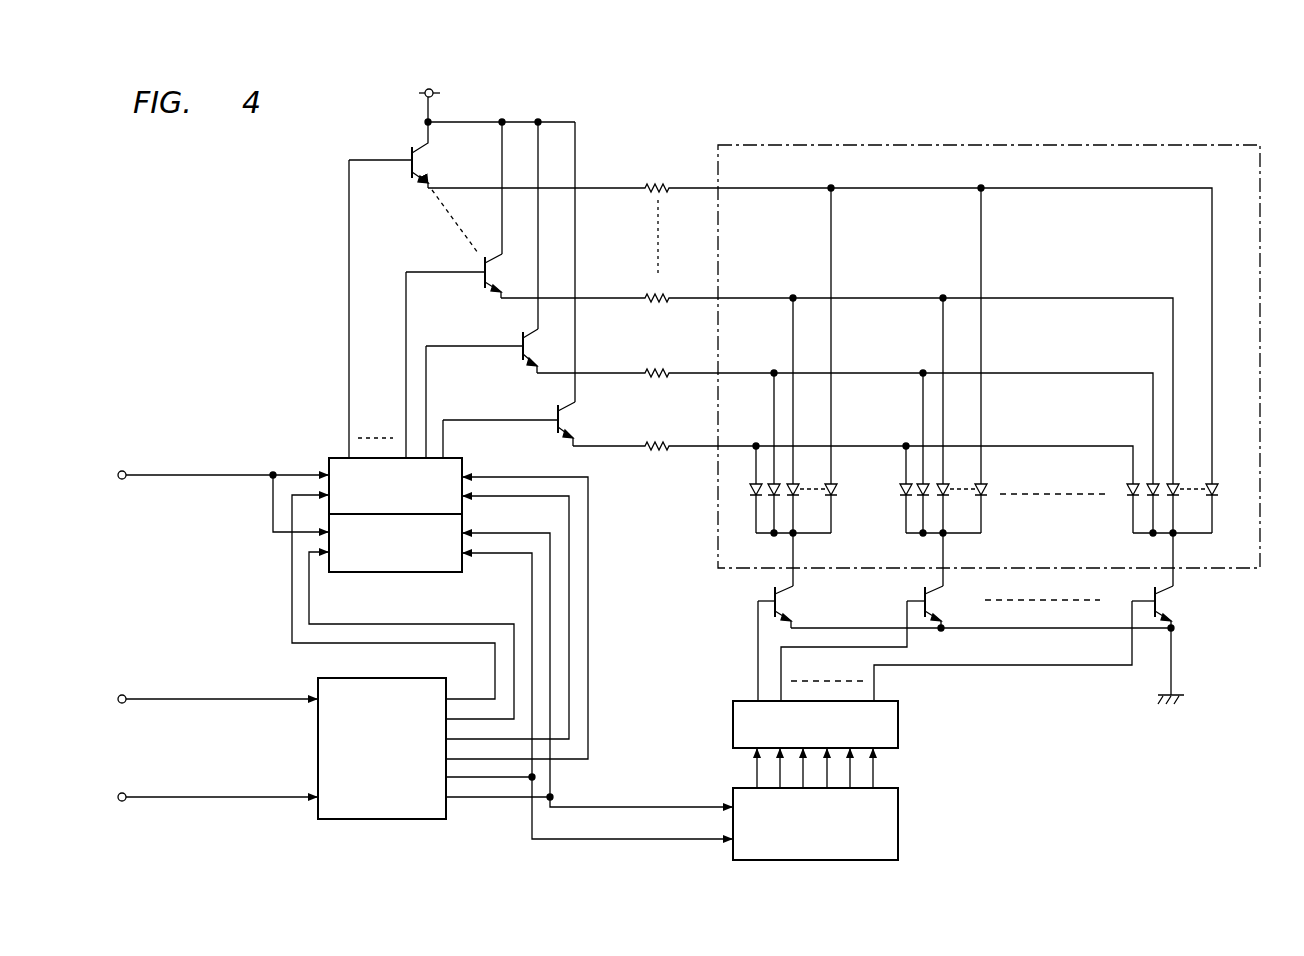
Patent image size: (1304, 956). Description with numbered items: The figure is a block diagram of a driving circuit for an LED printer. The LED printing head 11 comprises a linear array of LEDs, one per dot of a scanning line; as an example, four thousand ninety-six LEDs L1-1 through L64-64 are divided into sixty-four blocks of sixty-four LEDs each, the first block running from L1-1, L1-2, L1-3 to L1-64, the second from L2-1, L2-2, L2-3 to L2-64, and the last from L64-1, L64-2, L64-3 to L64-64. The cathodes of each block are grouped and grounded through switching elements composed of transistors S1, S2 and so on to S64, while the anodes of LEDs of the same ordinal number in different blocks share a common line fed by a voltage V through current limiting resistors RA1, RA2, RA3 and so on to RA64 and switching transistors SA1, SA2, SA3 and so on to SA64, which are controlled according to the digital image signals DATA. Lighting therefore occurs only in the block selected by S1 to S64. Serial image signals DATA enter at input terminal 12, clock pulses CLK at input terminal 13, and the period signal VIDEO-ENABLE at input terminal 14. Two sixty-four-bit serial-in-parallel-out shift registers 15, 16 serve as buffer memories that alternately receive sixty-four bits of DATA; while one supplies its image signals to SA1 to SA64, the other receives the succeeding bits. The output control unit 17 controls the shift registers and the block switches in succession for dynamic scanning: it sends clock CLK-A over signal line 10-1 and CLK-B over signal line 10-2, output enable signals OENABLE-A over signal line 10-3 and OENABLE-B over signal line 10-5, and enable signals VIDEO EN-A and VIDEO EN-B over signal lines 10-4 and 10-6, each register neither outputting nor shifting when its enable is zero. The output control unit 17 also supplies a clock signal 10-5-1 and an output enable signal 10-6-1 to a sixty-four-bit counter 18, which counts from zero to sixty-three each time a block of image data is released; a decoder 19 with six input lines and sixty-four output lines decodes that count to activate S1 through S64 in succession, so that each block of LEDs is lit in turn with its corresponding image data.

The LED printing head 11 is at (1192, 144).
The input terminal 12 is at (126, 469).
The input terminal 13 is at (126, 696).
The input terminal 14 is at (124, 794).
The shift register 15 is at (458, 458).
The shift register 16 is at (448, 572).
The output control unit 17 is at (430, 819).
The 64-bit counter 18 is at (900, 804).
The decoder 19 is at (900, 716).
The voltage V is at (437, 103).
The switching element SA64 is at (388, 290).
The switching element SA3 is at (477, 267).
The switching element SA2 is at (521, 340).
The switching element SA1 is at (554, 414).
The current limiting resistor RA64 is at (658, 183).
The current limiting resistor RA3 is at (658, 295).
The current limiting resistor RA2 is at (658, 368).
The current limiting resistor RA1 is at (658, 441).
The switching element S1 is at (784, 604).
The switching element S2 is at (934, 604).
The switching element S64 is at (1162, 604).
The LED L1-1 is at (755, 528).
The LED L1-2 is at (778, 539).
The LED L1-3 is at (795, 528).
The LED L1-64 is at (836, 537).
The LED L2-1 is at (905, 528).
The LED L2-2 is at (927, 539).
The LED L2-3 is at (945, 528).
The LED L2-64 is at (986, 537).
The LED L64-1 is at (1130, 528).
The LED L64-2 is at (1157, 539).
The LED L64-3 is at (1175, 528).
The LED L64-64 is at (1218, 537).
The signal line 10-1 is at (456, 700).
The signal line 10-2 is at (456, 720).
The signal line 10-3 is at (458, 740).
The signal line 10-4 is at (458, 760).
The signal line 10-5 is at (458, 778).
The signal line 10-6 is at (460, 798).
The output enable signal 10-6-1 is at (635, 807).
The clock signal 10-5-1 is at (635, 839).